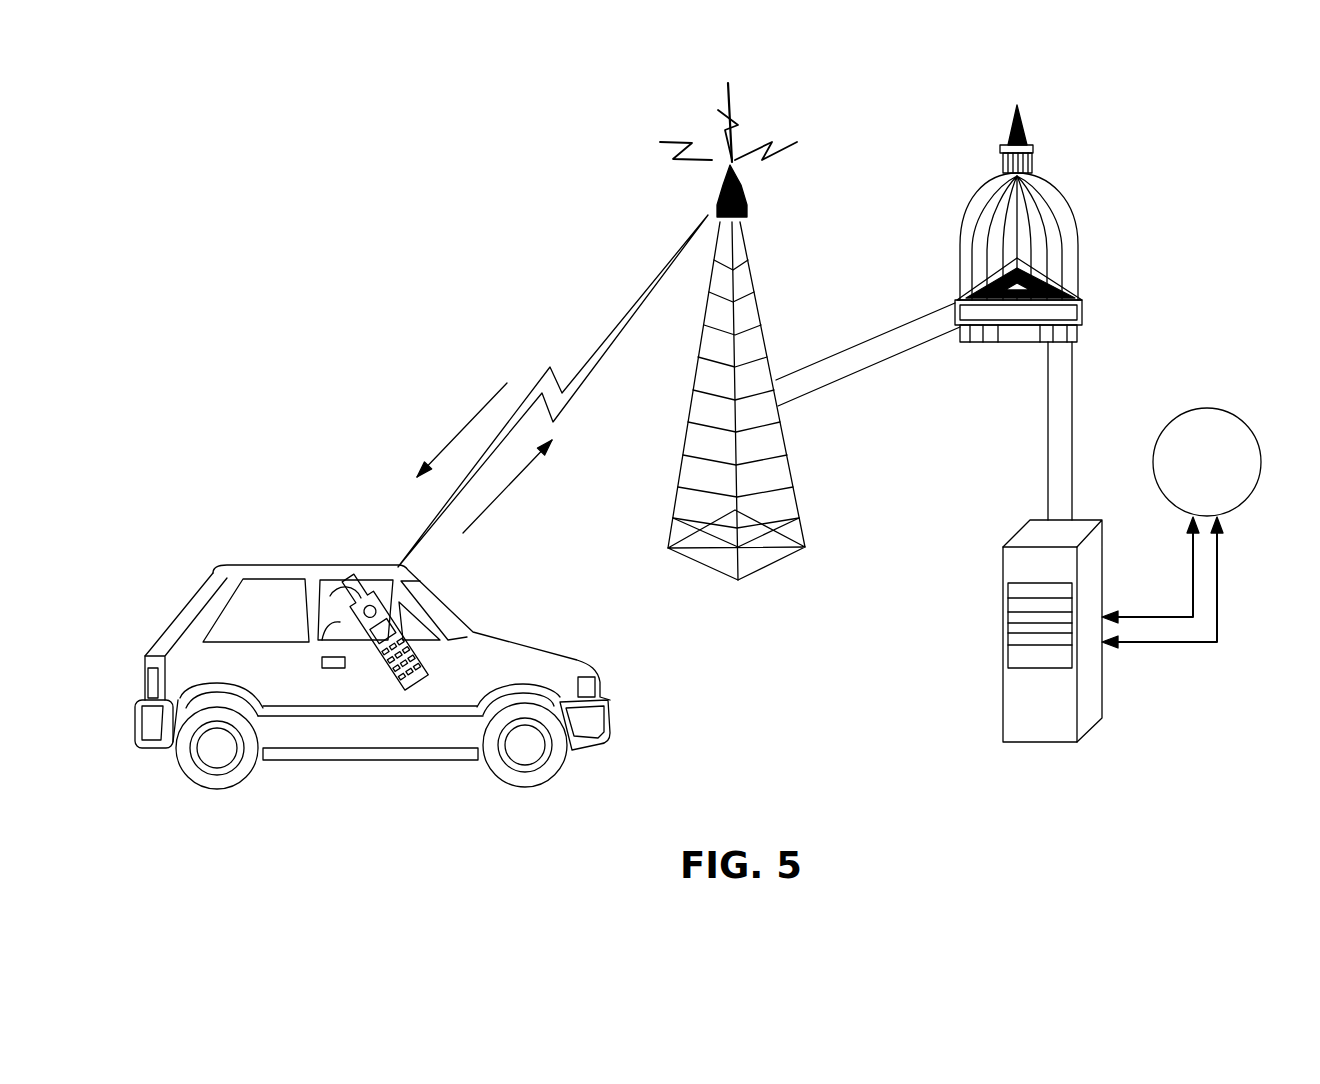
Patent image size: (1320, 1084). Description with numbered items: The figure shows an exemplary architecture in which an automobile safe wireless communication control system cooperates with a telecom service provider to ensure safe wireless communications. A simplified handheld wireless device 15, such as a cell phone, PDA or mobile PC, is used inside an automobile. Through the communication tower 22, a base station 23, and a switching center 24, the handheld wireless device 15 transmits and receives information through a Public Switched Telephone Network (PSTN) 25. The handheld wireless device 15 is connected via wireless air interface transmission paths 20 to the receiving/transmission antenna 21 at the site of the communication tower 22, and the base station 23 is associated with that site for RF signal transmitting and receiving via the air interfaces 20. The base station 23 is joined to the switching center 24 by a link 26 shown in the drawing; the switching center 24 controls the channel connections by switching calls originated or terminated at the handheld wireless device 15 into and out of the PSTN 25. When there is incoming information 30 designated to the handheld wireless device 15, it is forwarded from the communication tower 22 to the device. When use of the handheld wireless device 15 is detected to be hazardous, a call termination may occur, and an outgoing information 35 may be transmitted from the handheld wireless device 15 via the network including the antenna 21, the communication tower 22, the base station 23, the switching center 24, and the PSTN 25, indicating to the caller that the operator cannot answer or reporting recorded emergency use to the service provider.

The handheld wireless device 15 is at (348, 618).
The wireless air interface transmission paths 20 is at (617, 322).
The receiving/transmission antenna 21 is at (742, 103).
The communication tower 22 is at (708, 568).
The base station 23 is at (1065, 205).
The switching center 24 is at (1103, 677).
The Public Switched Telephone Network (PSTN) 25 is at (1170, 420).
The link between tower and base station 26 is at (858, 345).
The incoming information 30 is at (403, 430).
The outgoing information 35 is at (560, 499).